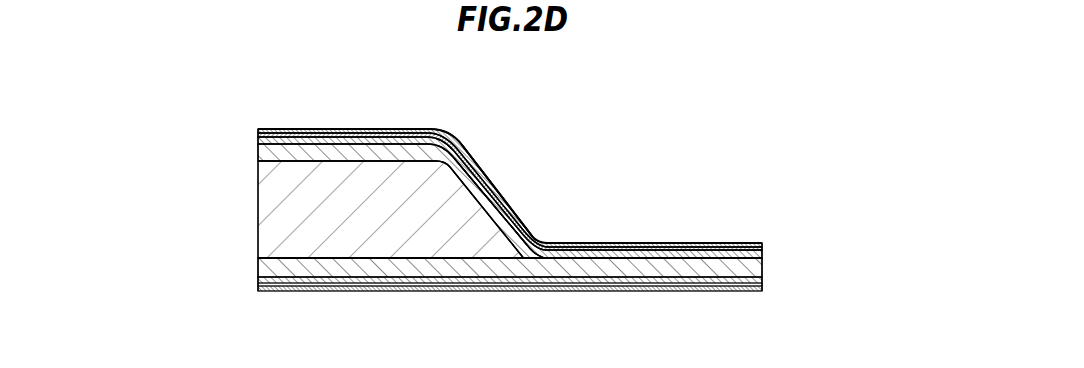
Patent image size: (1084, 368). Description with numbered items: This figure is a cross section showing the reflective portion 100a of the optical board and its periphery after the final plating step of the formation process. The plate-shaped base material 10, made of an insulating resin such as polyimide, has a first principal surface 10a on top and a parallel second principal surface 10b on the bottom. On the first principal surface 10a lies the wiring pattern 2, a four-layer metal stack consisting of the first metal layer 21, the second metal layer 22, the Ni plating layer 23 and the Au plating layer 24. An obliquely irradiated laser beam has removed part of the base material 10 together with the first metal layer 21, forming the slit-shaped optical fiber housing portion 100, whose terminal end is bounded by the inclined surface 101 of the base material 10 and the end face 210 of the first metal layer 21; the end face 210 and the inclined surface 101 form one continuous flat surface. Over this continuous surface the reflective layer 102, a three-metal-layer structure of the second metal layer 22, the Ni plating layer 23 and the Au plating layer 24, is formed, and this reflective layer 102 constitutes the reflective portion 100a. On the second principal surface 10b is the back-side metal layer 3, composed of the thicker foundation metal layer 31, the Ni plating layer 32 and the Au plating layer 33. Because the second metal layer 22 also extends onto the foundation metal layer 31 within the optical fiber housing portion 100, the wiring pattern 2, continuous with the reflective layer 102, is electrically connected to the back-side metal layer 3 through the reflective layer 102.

The wiring pattern 2 is at (461, 170).
The Au plating layer 24 is at (258, 131).
The Ni plating layer 23 is at (258, 137).
The second metal layer 22 is at (258, 144).
The first metal layer 21 is at (372, 201).
The base material 10 is at (477, 207).
The first principal surface 10a is at (335, 160).
The second principal surface 10b is at (324, 260).
The back-side metal layer 3 is at (462, 283).
The foundation metal layer 31 is at (262, 272).
The Ni plating layer 32 is at (262, 280).
The Au plating layer 33 is at (262, 290).
The end face 210 is at (457, 153).
The inclined surface 101 is at (522, 217).
The optical fiber housing portion 100 is at (493, 196).
The reflective portion 100a is at (564, 82).
The reflective layer 102 is at (556, 242).